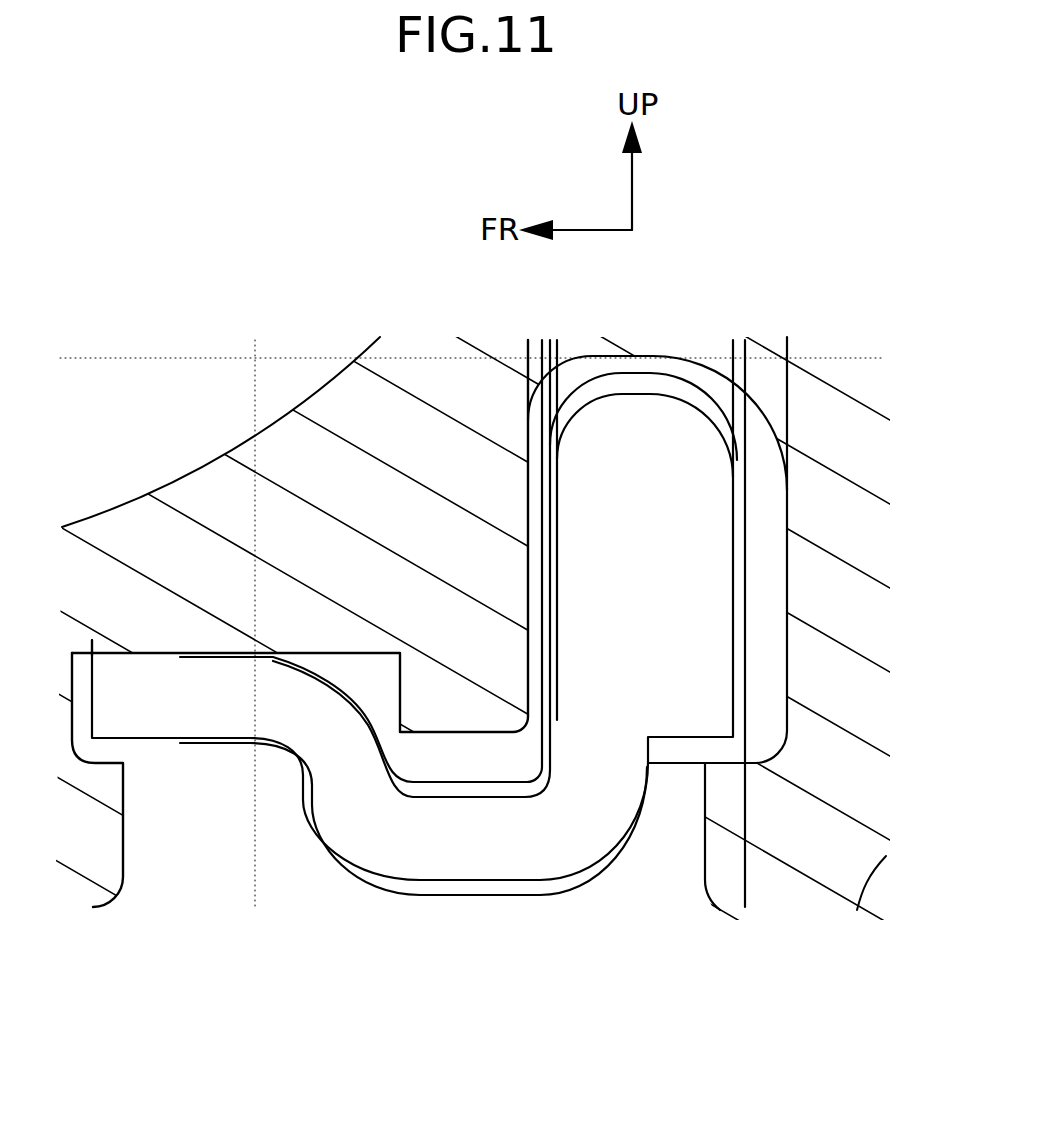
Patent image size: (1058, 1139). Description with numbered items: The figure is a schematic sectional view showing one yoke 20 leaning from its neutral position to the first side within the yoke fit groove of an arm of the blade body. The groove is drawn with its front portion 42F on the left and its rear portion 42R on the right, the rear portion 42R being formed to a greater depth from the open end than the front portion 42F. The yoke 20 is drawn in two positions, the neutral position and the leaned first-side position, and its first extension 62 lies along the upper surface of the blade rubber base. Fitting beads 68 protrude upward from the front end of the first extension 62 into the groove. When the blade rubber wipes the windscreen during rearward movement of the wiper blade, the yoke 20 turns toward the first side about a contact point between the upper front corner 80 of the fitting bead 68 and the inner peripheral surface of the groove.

The front portion 42F is at (377, 653).
The rear portion 42R is at (625, 358).
The yoke 20 is at (420, 905).
The first extension 62 is at (390, 848).
The fitting beads 68 is at (158, 697).
The upper front corner 80 is at (90, 645).